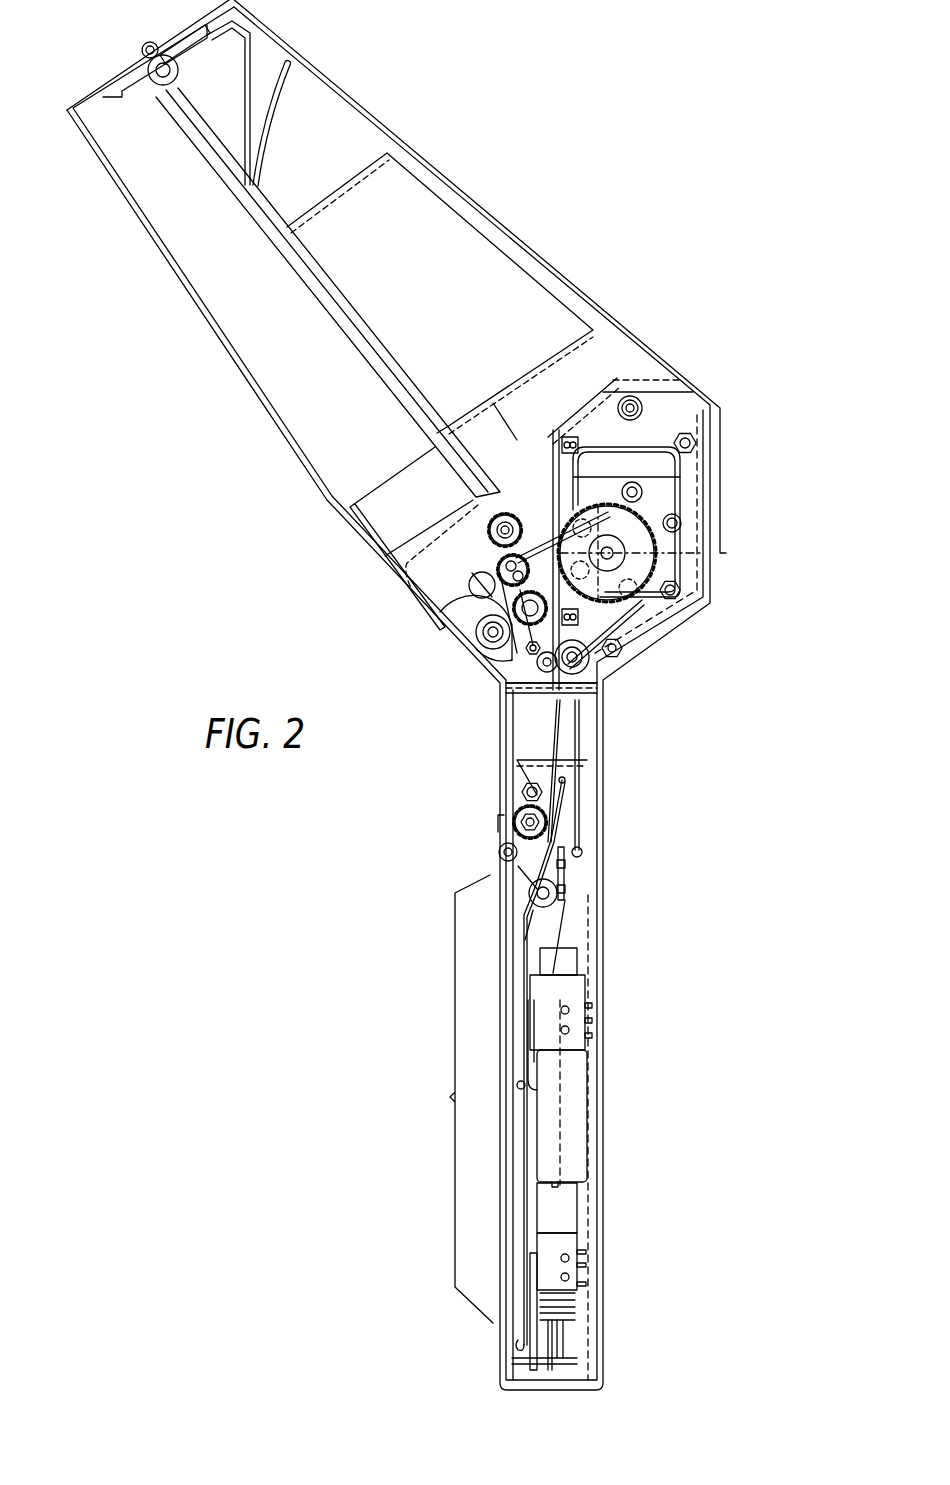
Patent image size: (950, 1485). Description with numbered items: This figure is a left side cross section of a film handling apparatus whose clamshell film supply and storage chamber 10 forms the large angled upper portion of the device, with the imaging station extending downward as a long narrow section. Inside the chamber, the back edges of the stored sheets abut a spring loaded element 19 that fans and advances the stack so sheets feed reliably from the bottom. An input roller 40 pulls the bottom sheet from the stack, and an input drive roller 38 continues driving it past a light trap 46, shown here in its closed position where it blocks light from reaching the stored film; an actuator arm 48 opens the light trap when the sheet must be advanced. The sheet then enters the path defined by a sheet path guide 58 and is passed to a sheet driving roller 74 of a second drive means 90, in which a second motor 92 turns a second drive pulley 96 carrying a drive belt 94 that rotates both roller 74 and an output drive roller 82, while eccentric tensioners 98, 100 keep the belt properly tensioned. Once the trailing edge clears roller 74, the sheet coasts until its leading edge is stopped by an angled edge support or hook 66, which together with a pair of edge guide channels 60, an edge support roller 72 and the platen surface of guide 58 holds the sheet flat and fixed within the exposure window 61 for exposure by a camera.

The clamshell film supply and storage chamber 10 is at (262, 437).
The spring loaded element 19 is at (266, 113).
The input drive roller 38 is at (463, 630).
The input roller 40 is at (492, 540).
The light trap 46 is at (537, 700).
The actuator arm 48 is at (579, 824).
The sheet path guide 58 is at (566, 781).
The edge guide channels 60 is at (517, 897).
The exposure window 61 is at (449, 1100).
The angled edge support (hook) 66 is at (516, 1348).
The edge support roller 72 is at (500, 855).
The sheet driving roller 74 is at (512, 824).
The output drive roller 82 is at (440, 610).
The second drive means 90 is at (634, 616).
The second motor 92 is at (641, 473).
The drive belt 94 is at (523, 535).
The second drive pulley 96 is at (620, 535).
The eccentric tensioner 98 is at (487, 665).
The eccentric tensioner 100 is at (592, 675).